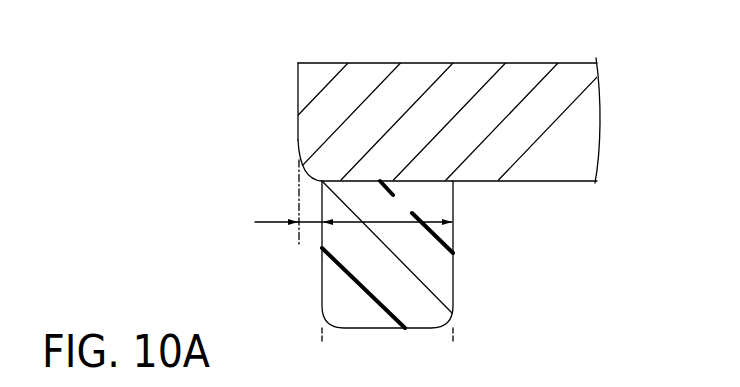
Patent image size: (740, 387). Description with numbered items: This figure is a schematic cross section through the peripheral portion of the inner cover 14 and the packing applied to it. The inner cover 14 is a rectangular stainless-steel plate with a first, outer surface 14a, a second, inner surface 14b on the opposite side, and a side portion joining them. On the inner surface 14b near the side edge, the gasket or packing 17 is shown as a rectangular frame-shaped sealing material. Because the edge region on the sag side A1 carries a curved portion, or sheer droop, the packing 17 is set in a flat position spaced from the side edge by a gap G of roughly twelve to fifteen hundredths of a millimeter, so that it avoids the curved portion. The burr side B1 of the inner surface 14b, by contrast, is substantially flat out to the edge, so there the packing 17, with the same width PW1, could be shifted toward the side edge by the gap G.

The inner cover 14 is at (585, 108).
The first surface 14a is at (538, 63).
The second surface 14b is at (537, 183).
The gasket 17 is at (440, 270).
The burr side B1 is at (312, 63).
The sag side A1 is at (322, 181).
The gap G is at (288, 202).
The width of the packing PW1 is at (387, 209).